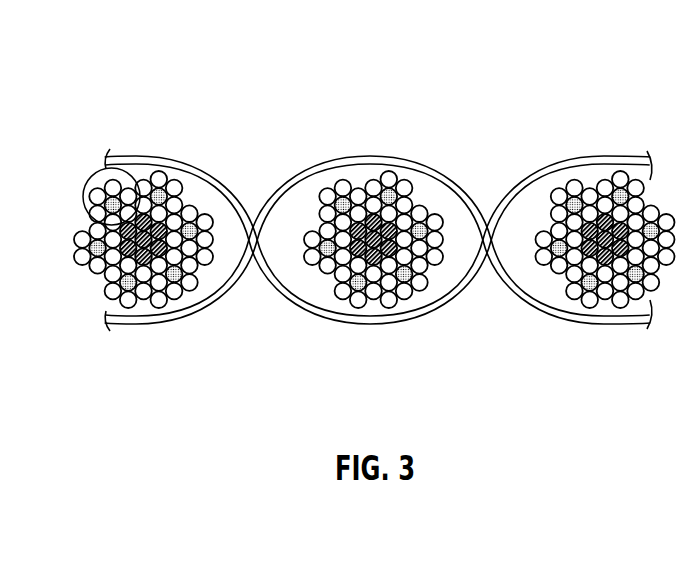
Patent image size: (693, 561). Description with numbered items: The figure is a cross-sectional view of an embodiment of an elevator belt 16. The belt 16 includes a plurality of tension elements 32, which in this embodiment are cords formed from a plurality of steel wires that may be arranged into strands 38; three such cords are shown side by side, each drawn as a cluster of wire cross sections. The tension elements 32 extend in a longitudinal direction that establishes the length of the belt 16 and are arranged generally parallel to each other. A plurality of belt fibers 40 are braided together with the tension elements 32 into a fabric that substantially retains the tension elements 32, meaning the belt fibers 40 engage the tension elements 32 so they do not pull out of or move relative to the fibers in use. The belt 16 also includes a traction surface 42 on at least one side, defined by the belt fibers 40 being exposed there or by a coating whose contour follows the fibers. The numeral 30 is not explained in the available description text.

The belt 16 is at (69, 65).
The optical fibers 30 is at (100, 196).
The tension elements 32 is at (121, 167).
The strands 38 is at (88, 182).
The belt fibers 40 is at (193, 163).
The traction surface 42 is at (143, 155).